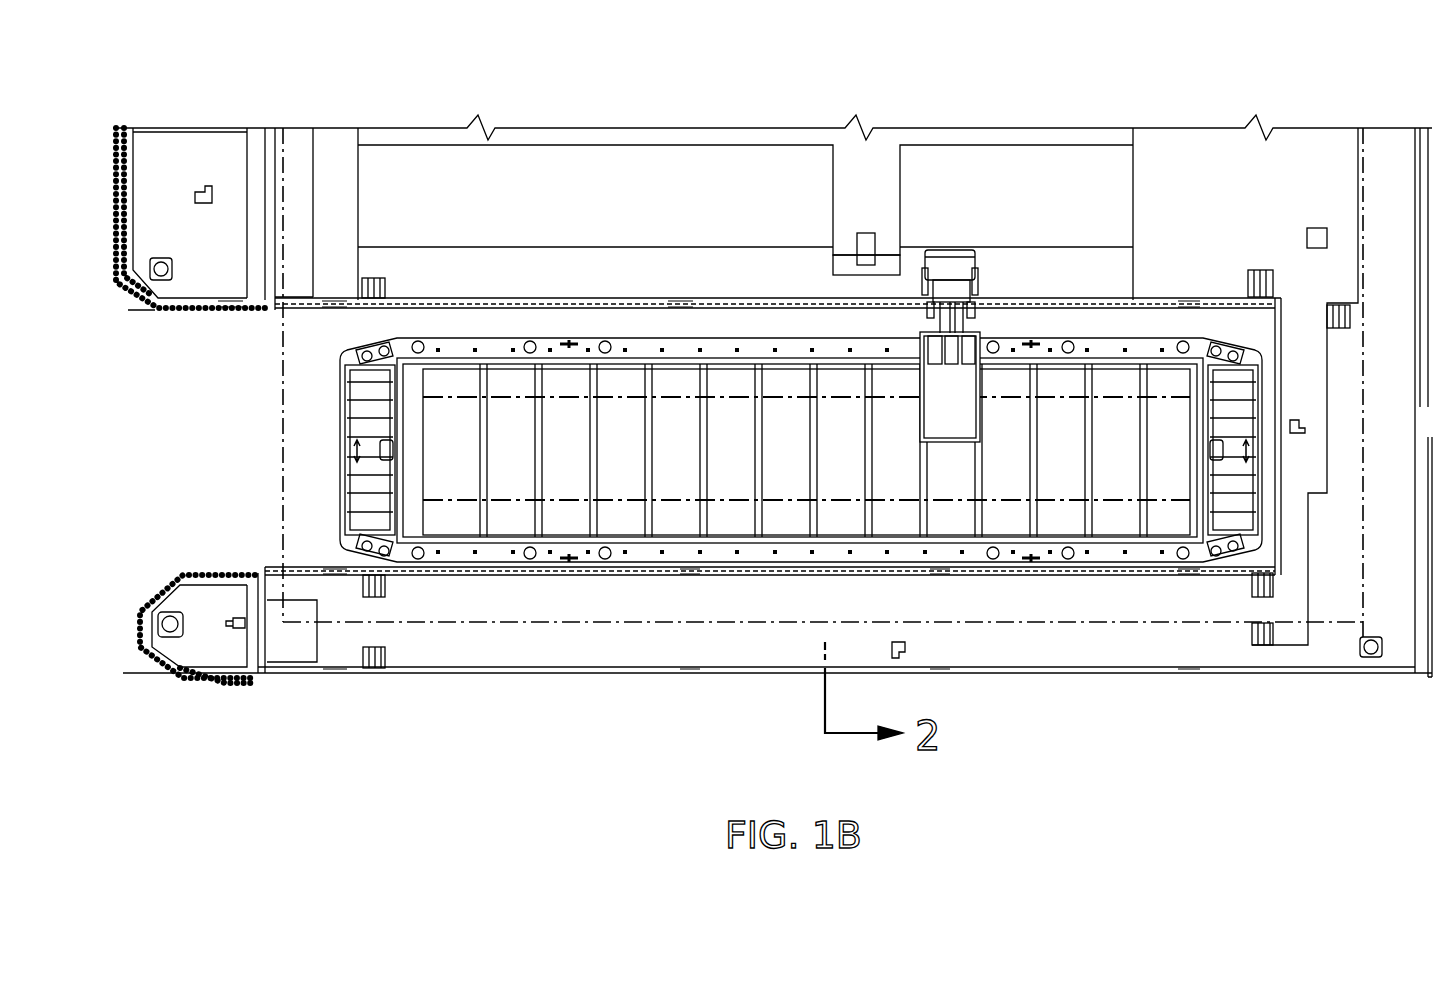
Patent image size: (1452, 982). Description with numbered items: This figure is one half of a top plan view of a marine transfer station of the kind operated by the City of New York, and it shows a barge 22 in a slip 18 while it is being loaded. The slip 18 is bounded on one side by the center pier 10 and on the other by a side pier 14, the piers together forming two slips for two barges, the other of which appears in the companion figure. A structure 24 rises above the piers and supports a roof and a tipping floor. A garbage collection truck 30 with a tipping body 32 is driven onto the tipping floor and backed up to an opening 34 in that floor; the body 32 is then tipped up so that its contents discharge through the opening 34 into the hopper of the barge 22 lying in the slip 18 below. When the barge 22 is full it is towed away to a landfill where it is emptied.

The center pier 10 is at (637, 213).
The side pier 14 is at (487, 637).
The slip 18 is at (337, 568).
The barge 22 is at (342, 422).
The structure 24 is at (1363, 193).
The garbage collection truck 30 is at (977, 273).
The tipping body 32 is at (972, 417).
The opening 34 is at (617, 482).